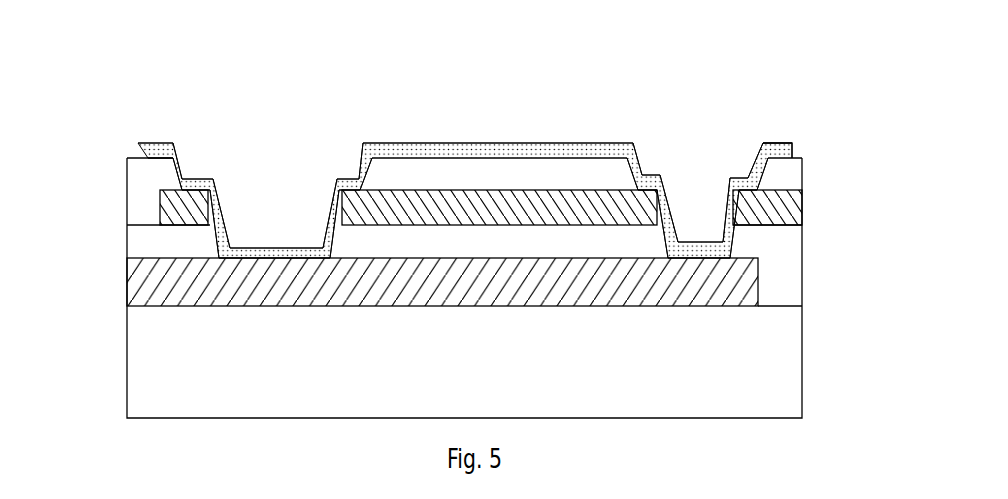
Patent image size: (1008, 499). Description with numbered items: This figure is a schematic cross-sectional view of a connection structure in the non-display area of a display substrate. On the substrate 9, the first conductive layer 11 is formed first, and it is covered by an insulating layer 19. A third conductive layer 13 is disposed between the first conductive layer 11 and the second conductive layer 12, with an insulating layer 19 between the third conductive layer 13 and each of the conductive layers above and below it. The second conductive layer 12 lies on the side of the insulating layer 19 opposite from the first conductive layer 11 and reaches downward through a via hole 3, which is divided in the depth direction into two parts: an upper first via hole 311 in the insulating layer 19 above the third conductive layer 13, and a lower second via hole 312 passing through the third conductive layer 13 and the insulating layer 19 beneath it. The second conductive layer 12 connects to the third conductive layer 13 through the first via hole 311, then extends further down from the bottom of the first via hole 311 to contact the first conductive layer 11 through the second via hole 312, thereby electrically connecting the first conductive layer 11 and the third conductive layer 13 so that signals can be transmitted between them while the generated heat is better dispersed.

The via hole 3 is at (465, 129).
The first via hole 311 is at (322, 162).
The second via hole 312 is at (262, 227).
The substrate 9 is at (760, 373).
The first conductive layer 11 is at (758, 275).
The second conductive layer 12 is at (793, 145).
The third conductive layer 13 is at (782, 205).
The insulating layer 19 is at (150, 174).